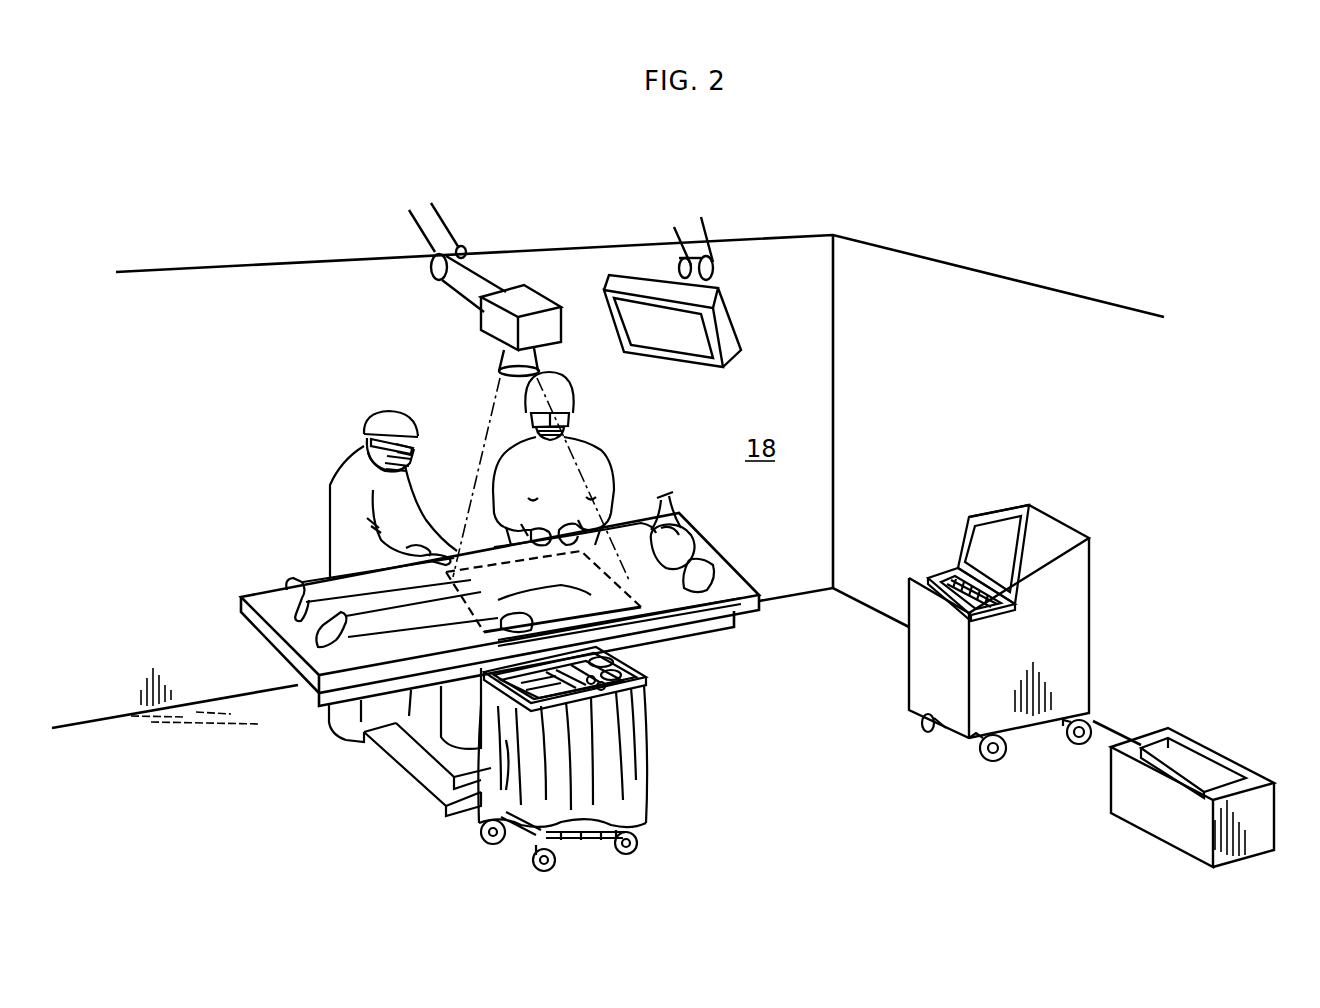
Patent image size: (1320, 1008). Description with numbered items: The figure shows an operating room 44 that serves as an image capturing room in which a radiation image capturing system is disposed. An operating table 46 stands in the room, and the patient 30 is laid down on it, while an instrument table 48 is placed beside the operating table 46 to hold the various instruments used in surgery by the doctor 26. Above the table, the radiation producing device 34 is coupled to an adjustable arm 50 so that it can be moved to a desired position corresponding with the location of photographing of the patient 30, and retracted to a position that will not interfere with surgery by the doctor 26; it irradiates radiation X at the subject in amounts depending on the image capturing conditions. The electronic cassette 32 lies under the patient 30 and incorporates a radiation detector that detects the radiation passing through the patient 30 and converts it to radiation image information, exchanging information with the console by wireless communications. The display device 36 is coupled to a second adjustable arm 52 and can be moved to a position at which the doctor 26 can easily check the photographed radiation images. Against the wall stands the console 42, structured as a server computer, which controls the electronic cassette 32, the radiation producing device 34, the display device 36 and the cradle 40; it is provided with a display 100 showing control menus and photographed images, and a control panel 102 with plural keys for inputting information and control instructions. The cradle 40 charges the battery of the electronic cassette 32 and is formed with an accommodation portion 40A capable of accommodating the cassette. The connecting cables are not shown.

The doctor 26 is at (332, 504).
The patient 30 is at (312, 580).
The electronic cassette 32 is at (497, 637).
The radiation producing device 34 is at (470, 322).
The display device 36 is at (735, 300).
The cradle 40 is at (1181, 783).
The accommodation portion 40A is at (1200, 765).
The console 42 is at (1043, 658).
The operating room 44 is at (834, 290).
The operating table 46 is at (264, 594).
The instrument table 48 is at (622, 730).
The adjustable arm 50 is at (439, 228).
The adjustable arm 52 is at (699, 232).
The display 100 is at (990, 545).
The control panel 102 is at (950, 572).